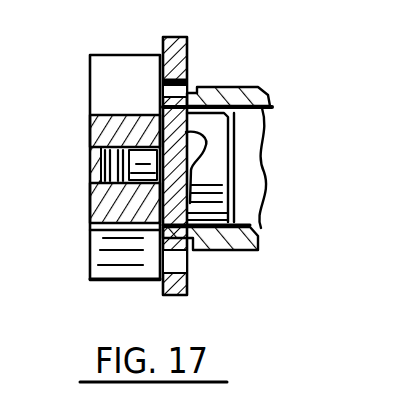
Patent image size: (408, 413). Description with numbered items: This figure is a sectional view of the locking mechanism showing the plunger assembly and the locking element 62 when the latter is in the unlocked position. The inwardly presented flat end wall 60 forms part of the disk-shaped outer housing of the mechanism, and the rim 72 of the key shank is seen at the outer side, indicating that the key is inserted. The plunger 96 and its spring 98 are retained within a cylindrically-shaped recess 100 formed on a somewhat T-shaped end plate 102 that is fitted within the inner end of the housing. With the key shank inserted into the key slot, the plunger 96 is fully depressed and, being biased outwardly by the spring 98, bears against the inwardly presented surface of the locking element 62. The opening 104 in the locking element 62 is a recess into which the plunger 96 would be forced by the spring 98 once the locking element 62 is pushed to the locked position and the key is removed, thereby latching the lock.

The inwardly presented flat end wall 60 is at (246, 85).
The locking element 62 is at (188, 42).
The rim 72 is at (163, 88).
The plunger 96 is at (158, 137).
The spring 98 is at (98, 133).
The cylindrically-shaped recess 100 is at (103, 178).
The T-shaped end plate 102 is at (90, 267).
The opening 104 is at (192, 178).